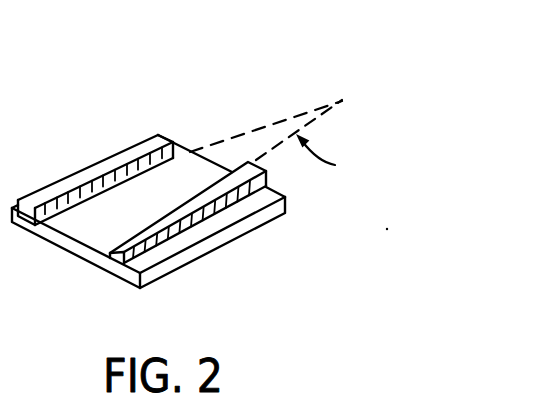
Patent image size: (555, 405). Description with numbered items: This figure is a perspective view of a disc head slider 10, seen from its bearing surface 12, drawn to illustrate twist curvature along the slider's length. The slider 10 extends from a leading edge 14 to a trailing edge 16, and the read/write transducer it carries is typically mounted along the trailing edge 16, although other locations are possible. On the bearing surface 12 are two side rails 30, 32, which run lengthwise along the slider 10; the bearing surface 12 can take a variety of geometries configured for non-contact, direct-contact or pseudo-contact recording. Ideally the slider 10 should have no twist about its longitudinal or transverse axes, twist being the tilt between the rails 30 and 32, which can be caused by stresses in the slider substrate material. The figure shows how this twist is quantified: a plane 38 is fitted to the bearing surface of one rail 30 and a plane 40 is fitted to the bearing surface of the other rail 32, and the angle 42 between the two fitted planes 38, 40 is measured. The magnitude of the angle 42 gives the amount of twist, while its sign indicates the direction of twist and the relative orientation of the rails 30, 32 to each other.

The disc head slider 10 is at (72, 88).
The bearing surface 12 is at (112, 160).
The leading edge 14 is at (171, 148).
The trailing edge 16 is at (63, 241).
The side rail 30 is at (56, 190).
The side rail 32 is at (155, 248).
The fitted plane 38 is at (152, 160).
The fitted plane 40 is at (206, 213).
The angle 42 is at (285, 106).